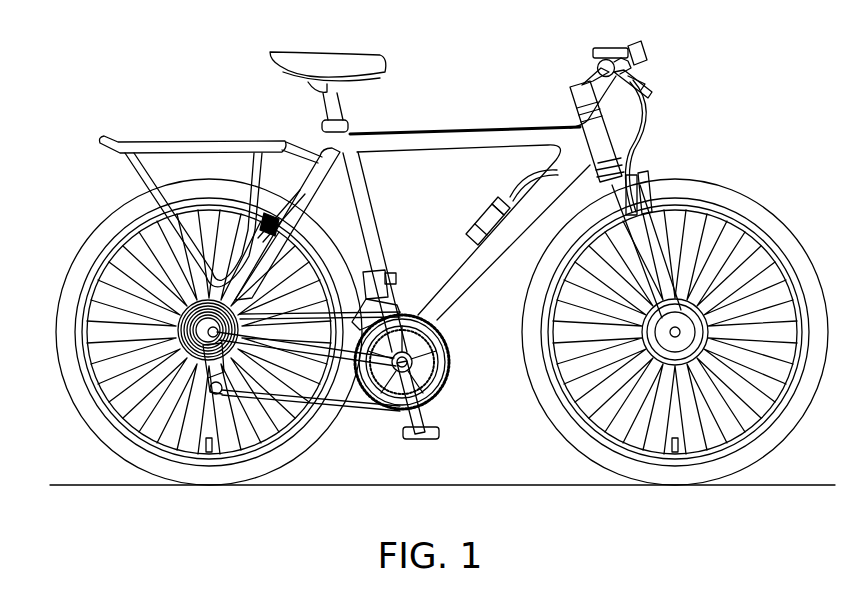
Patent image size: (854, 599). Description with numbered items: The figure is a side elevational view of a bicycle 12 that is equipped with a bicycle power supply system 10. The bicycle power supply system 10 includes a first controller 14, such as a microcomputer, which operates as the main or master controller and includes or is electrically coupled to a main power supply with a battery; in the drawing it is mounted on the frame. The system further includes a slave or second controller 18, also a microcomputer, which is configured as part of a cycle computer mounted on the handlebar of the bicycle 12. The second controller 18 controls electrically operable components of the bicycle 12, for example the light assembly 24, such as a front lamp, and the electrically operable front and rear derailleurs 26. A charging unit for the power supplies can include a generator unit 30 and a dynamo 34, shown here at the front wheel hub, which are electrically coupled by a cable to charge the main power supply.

The bicycle power supply system 10 is at (503, 176).
The bicycle 12 is at (416, 140).
The first controller 14 is at (470, 228).
The second controller 18 is at (609, 47).
The light assembly 24 is at (648, 50).
The front and rear derailleurs 26 is at (170, 341).
The generator unit 30 is at (687, 323).
The dynamo 34 is at (675, 332).